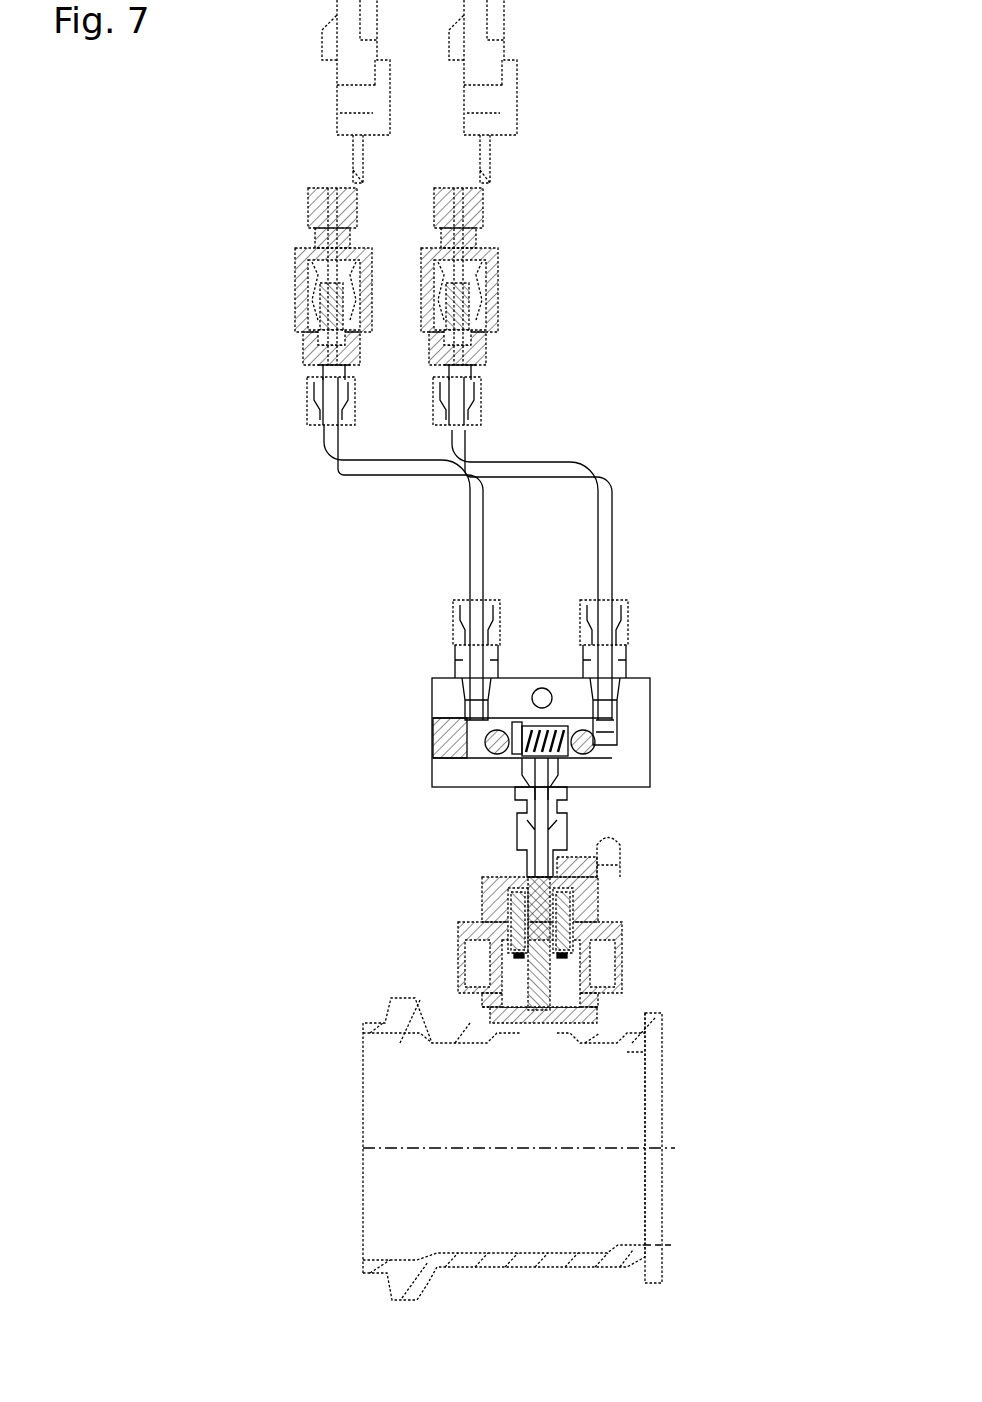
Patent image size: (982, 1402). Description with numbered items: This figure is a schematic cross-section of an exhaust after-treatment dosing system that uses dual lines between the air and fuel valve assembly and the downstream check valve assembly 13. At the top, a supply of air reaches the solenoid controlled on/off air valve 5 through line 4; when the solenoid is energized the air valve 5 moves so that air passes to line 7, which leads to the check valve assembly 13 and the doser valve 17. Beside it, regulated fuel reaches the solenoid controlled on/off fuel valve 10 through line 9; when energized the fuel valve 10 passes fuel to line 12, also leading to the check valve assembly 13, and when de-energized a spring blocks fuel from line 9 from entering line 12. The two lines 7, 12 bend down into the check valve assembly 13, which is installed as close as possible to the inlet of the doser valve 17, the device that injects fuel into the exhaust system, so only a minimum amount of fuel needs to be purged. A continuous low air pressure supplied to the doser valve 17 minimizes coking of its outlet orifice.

The line 4 is at (360, 150).
The air valve 5 is at (320, 245).
The line 7 is at (345, 459).
The line 9 is at (487, 160).
The fuel valve 10 is at (478, 280).
The line 12 is at (501, 460).
The check valve assembly 13 is at (628, 725).
The doser valve 17 is at (622, 898).